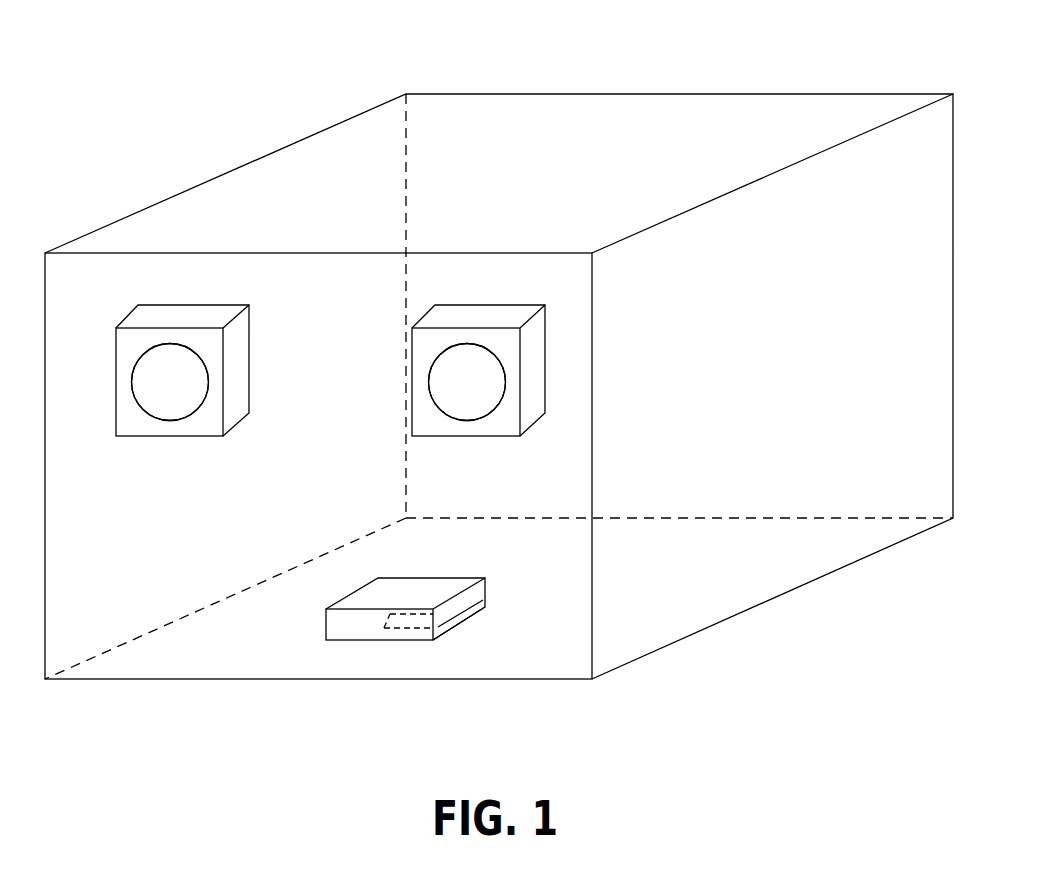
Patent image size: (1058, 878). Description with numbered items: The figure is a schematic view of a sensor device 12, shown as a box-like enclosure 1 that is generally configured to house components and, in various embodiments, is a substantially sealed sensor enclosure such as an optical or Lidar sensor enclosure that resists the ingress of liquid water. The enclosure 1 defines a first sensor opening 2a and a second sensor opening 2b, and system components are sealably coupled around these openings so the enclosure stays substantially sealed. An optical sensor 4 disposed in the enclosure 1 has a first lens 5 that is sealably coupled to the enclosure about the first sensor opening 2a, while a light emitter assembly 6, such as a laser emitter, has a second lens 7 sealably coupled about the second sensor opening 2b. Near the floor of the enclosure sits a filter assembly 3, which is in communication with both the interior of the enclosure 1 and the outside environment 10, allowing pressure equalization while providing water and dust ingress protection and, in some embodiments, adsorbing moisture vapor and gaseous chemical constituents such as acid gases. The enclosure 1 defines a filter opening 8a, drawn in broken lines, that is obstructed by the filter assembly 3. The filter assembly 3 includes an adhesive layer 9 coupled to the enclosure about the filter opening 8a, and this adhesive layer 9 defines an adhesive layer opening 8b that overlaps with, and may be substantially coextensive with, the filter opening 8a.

The enclosure 1 is at (180, 195).
The sensor device 12 is at (288, 96).
The outside environment 10 is at (877, 659).
The first sensor opening 2a is at (455, 420).
The second sensor opening 2b is at (162, 418).
The filter assembly 3 is at (333, 625).
The optical sensor 4 is at (532, 379).
The first lens 5 is at (443, 389).
The light emitter assembly 6 is at (237, 379).
The second lens 7 is at (145, 388).
The filter opening 8a is at (398, 618).
The adhesive layer opening 8b is at (440, 618).
The adhesive layer 9 is at (470, 623).